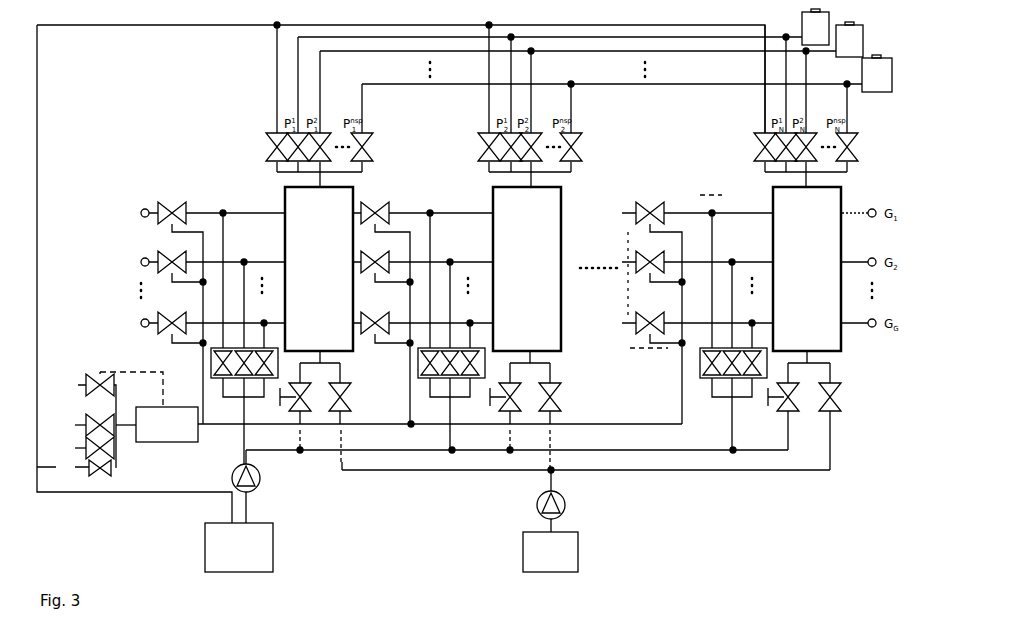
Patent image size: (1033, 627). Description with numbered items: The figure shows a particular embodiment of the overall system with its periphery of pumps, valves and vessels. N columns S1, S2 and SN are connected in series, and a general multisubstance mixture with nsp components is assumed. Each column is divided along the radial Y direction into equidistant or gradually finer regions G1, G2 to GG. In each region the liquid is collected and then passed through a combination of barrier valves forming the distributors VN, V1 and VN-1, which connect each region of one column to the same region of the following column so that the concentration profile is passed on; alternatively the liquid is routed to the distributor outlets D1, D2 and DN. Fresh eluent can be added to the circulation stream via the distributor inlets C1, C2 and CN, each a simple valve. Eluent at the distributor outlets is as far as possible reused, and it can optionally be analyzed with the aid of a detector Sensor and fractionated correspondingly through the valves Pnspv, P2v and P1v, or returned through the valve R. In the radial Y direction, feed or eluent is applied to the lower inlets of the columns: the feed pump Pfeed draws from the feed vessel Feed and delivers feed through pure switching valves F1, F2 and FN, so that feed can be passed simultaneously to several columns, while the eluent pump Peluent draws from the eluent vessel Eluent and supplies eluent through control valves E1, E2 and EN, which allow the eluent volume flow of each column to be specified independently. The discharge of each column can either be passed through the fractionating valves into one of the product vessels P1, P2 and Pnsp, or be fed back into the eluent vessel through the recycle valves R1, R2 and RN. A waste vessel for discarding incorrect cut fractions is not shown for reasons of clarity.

The first column S1 is at (319, 269).
The second column S2 is at (527, 269).
The Nth column SN is at (807, 269).
The recycle valve of the first column R1 is at (275, 144).
The recycle valve of the second column R2 is at (487, 144).
The recycle valve of the Nth column RN is at (762, 144).
The distributor of column N VN is at (217, 302).
The distributor of column 1 V1 is at (423, 304).
The distributor of column N-1 VN-1 is at (697, 302).
The distributor outlet of the first column D1 is at (233, 363).
The distributor outlet of the second column D2 is at (440, 363).
The distributor outlet of the Nth column DN is at (720, 363).
The distributor inlet of the first column C1 is at (258, 411).
The distributor inlet of the second column C2 is at (465, 404).
The distributor inlet of the Nth column CN is at (747, 404).
The eluent input control valve of the first column E1 is at (302, 405).
The eluent input control valve of the second column E2 is at (512, 405).
The eluent input control valve of the Nth column EN is at (790, 406).
The feed switching valve of the first column F1 is at (346, 416).
The feed switching valve of the second column F2 is at (556, 415).
The feed switching valve of the Nth column FN is at (836, 416).
The first product vessel P1 is at (815, 27).
The second product vessel P2 is at (849, 39).
The nsp-th product vessel Pnsp is at (877, 73).
The first G region G1 is at (133, 215).
The second G region G2 is at (133, 264).
The Gth G region GG is at (133, 325).
The eluent pump Peluent is at (265, 486).
The feed pump Pfeed is at (568, 501).
The eluent vessel Eluent is at (239, 547).
The feed vessel Feed is at (550, 552).
The detector Sensor is at (157, 424).
The fractionating valve for the nsp-th product at the detector Pnspv is at (86, 420).
The fractionating valve for the second product at the detector P2v is at (86, 425).
The fractionating valve for the first product at the detector P1v is at (86, 448).
The eluent return valve R is at (74, 469).